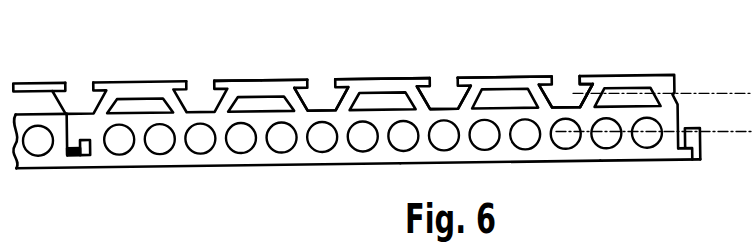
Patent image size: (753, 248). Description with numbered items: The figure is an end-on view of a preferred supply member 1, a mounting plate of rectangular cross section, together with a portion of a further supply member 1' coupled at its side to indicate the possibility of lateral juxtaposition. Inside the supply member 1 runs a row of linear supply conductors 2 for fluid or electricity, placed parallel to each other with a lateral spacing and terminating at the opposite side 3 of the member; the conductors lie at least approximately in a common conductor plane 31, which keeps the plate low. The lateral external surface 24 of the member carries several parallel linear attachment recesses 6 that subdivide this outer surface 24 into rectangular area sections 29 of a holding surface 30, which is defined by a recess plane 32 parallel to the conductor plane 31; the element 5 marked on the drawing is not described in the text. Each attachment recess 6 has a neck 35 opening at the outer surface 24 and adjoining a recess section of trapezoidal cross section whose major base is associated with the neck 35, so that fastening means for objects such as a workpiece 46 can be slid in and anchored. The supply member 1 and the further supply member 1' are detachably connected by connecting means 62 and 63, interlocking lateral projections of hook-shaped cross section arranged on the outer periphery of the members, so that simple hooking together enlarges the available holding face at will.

The further supply member 1' is at (39, 50).
The supply member 1 is at (640, 152).
The supply conductor 2 is at (139, 99).
The opposite side 3 is at (554, 168).
The support surface 5 is at (378, 70).
The attachment recess 6 is at (332, 92).
The lateral external surface 24 is at (237, 80).
The area section 29 is at (507, 68).
The holding surface 30 is at (290, 80).
The conductor plane 31 is at (717, 134).
The recess plane 32 is at (708, 91).
The recess neck 35 is at (566, 96).
The workpiece 46 is at (226, 157).
The connecting means 62 is at (86, 158).
The connecting means 63 is at (78, 130).